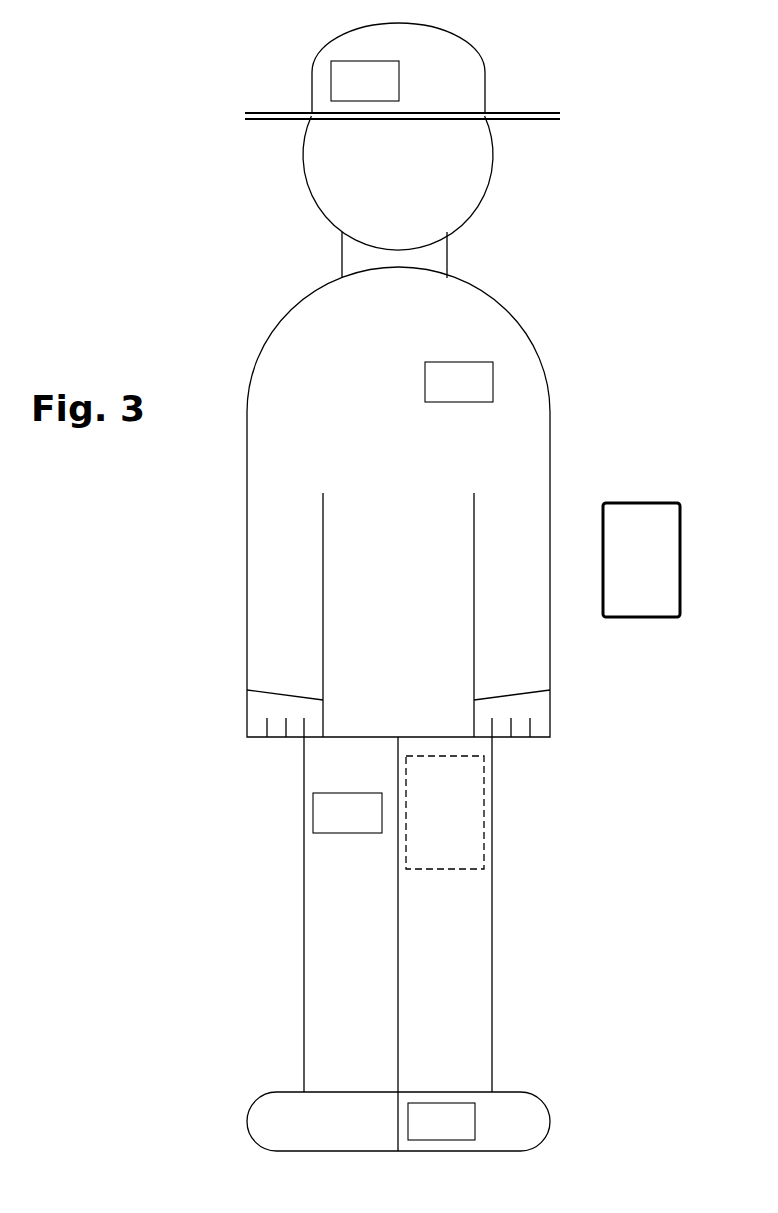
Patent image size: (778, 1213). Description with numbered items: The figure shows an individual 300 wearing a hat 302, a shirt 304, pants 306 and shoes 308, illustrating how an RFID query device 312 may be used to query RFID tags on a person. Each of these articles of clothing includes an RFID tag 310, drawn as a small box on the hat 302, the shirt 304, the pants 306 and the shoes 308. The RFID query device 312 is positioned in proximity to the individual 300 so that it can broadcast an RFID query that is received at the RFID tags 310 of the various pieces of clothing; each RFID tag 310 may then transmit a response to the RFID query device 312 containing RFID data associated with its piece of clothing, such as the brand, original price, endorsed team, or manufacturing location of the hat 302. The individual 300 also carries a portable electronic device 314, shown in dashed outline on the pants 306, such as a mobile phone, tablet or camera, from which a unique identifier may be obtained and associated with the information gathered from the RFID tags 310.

The individual 300 is at (614, 286).
The hat 302 is at (402, 71).
The shirt 304 is at (398, 502).
The pants 306 is at (398, 914).
The shoes 308 is at (398, 1121).
The RFID tag 310 is at (403, 600).
The RFID query device 312 is at (641, 560).
The portable electronic device 314 is at (445, 812).